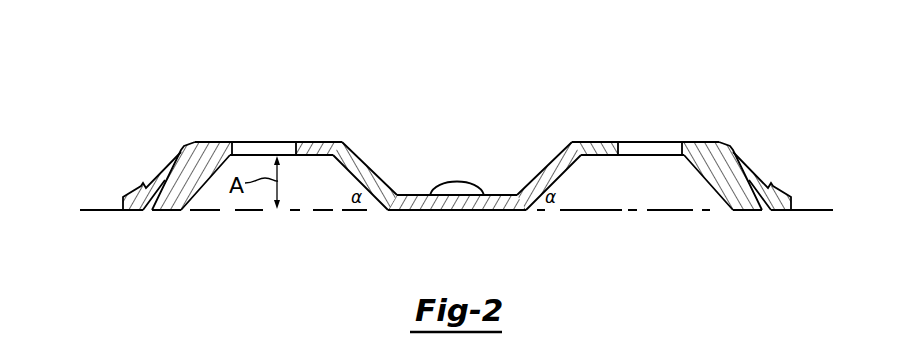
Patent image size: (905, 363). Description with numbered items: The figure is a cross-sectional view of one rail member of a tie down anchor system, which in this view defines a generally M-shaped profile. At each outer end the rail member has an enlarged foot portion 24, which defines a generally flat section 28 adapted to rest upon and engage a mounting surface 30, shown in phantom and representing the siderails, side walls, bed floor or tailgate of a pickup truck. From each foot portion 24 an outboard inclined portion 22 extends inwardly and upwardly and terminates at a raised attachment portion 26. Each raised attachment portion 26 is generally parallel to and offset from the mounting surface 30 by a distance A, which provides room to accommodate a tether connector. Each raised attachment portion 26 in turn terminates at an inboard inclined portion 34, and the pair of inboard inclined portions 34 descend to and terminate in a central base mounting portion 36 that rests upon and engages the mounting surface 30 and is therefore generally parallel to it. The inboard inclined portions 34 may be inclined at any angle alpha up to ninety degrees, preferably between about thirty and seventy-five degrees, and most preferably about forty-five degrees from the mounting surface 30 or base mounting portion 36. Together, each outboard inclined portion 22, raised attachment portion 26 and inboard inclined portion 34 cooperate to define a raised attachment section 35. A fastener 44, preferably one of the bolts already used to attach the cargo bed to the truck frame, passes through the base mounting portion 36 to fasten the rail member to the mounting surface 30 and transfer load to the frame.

The outboard inclined portion 22 is at (162, 177).
The foot portion 24 is at (207, 210).
The flat section 28 is at (162, 210).
The raised attachment portion 26 is at (313, 150).
The mounting surface 30 is at (317, 210).
The inboard inclined portion 34 is at (361, 158).
The raised attachment section 35 is at (215, 108).
The base mounting portion 36 is at (481, 210).
The fastener 44 is at (461, 182).